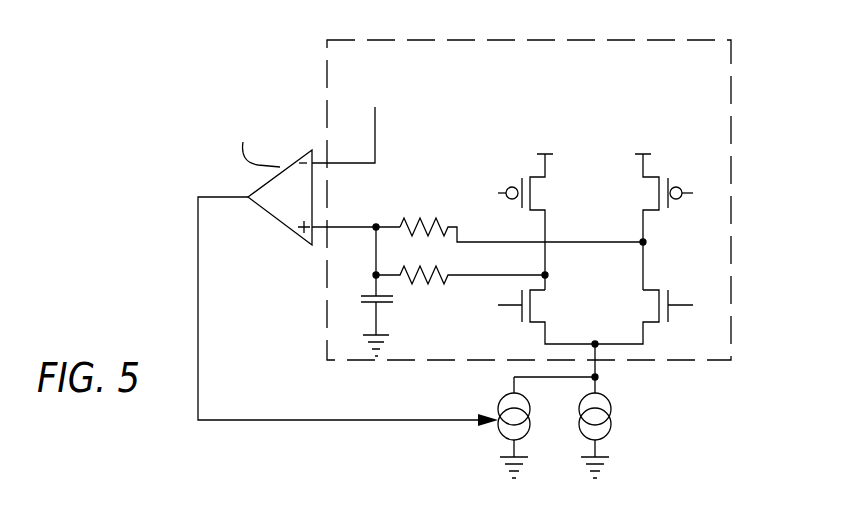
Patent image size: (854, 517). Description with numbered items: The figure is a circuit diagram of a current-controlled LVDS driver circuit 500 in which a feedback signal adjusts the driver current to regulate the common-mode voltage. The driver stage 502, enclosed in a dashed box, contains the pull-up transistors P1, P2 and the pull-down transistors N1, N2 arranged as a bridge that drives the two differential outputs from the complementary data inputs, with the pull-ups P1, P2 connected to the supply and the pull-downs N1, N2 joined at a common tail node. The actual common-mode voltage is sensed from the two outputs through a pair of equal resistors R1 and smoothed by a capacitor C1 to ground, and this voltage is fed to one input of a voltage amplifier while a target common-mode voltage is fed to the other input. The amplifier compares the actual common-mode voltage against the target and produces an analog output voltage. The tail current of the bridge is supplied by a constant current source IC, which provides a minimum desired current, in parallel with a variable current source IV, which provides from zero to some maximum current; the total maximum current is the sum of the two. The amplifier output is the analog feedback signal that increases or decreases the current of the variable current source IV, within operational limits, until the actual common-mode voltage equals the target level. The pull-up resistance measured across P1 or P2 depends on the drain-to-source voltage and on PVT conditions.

The driver circuit 500 is at (150, 198).
The output stage 502 is at (627, 40).
The resistor R1 is at (509, 242).
The capacitor C1 is at (364, 324).
The pull-up transistor P1 is at (533, 222).
The pull-up transistor P2 is at (659, 222).
The NMOS transistor N1 is at (546, 317).
The NMOS transistor N2 is at (644, 317).
The variable current source IV is at (505, 435).
The constant current source IC is at (586, 435).